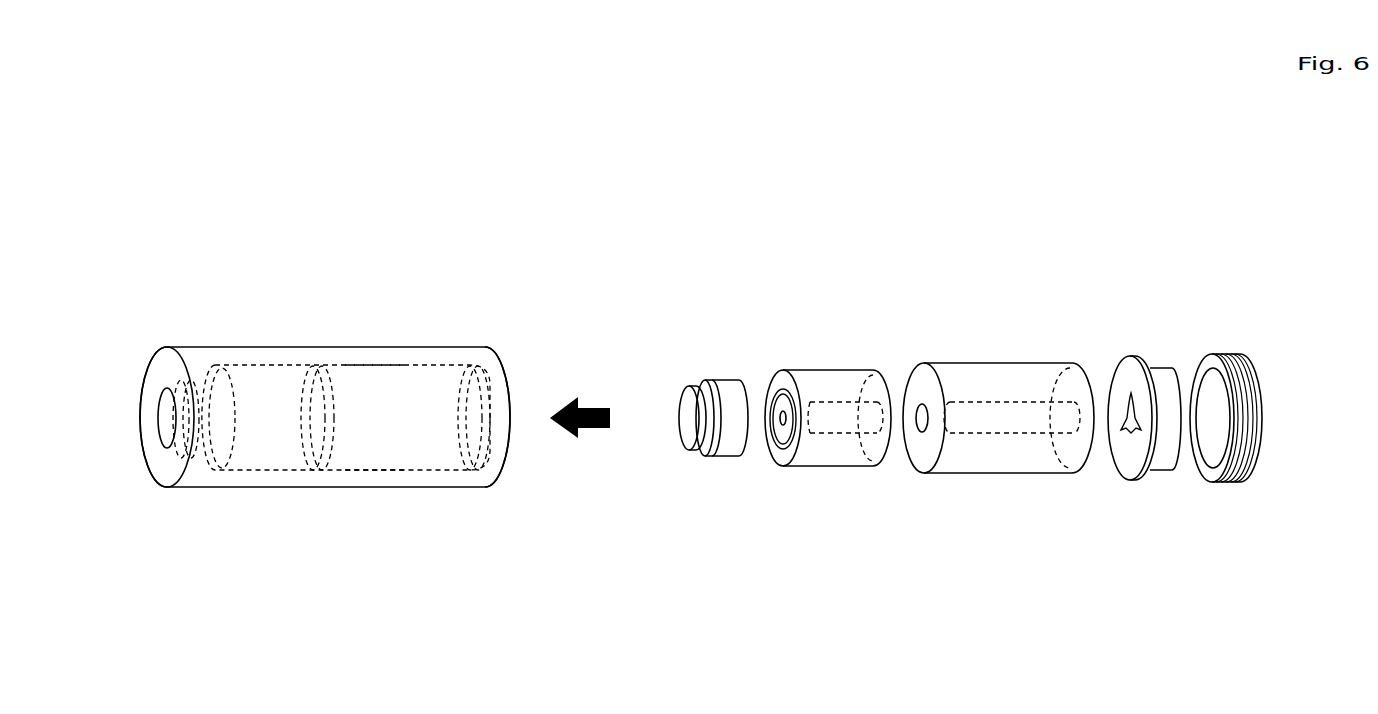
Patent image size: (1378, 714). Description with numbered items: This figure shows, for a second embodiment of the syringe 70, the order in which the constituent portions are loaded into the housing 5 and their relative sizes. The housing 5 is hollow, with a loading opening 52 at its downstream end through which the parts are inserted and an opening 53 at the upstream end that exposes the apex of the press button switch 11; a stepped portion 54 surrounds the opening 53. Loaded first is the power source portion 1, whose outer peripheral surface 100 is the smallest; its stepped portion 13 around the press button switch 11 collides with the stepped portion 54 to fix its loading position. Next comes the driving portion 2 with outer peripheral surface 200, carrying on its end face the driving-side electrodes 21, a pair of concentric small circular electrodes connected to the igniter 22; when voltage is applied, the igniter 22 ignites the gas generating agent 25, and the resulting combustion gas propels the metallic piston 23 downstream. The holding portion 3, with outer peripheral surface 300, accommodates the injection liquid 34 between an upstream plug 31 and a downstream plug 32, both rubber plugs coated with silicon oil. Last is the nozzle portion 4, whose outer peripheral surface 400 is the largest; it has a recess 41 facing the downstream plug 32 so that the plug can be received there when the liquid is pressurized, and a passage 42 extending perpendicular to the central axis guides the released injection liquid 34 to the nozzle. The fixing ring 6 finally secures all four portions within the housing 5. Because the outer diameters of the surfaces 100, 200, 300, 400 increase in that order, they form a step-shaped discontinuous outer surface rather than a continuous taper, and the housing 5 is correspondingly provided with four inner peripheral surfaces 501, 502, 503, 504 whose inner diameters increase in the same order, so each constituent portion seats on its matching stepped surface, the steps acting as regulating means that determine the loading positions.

The housing 5 is at (339, 388).
The loading opening 52 is at (500, 428).
The opening 53 is at (163, 412).
The stepped portion 54 is at (175, 385).
The inner peripheral surface 501 is at (220, 368).
The inner peripheral surface 502 is at (269, 370).
The inner peripheral surface 503 is at (377, 368).
The inner peripheral surface 504 is at (484, 358).
The syringe 70 is at (521, 568).
The power source portion 1 is at (708, 459).
The outer peripheral surface 100 is at (725, 460).
The press button switch 11 is at (690, 400).
The stepped portion 13 is at (703, 383).
The driving portion 2 is at (834, 459).
The outer peripheral surface 200 is at (835, 470).
The driving-side electrodes 21 is at (785, 428).
The igniter 22 is at (807, 410).
The piston 23 is at (867, 413).
The gas generating agent 25 is at (838, 427).
The holding portion 3 is at (999, 458).
The outer peripheral surface 300 is at (972, 476).
The upstream plug 31 is at (948, 402).
The downstream plug 32 is at (1060, 415).
The injection liquid 34 is at (1003, 420).
The nozzle portion 4 is at (1148, 442).
The outer peripheral surface 400 is at (1140, 358).
The recess 41 is at (1137, 470).
The passage 42 is at (1127, 395).
The fixing ring 6 is at (1237, 470).